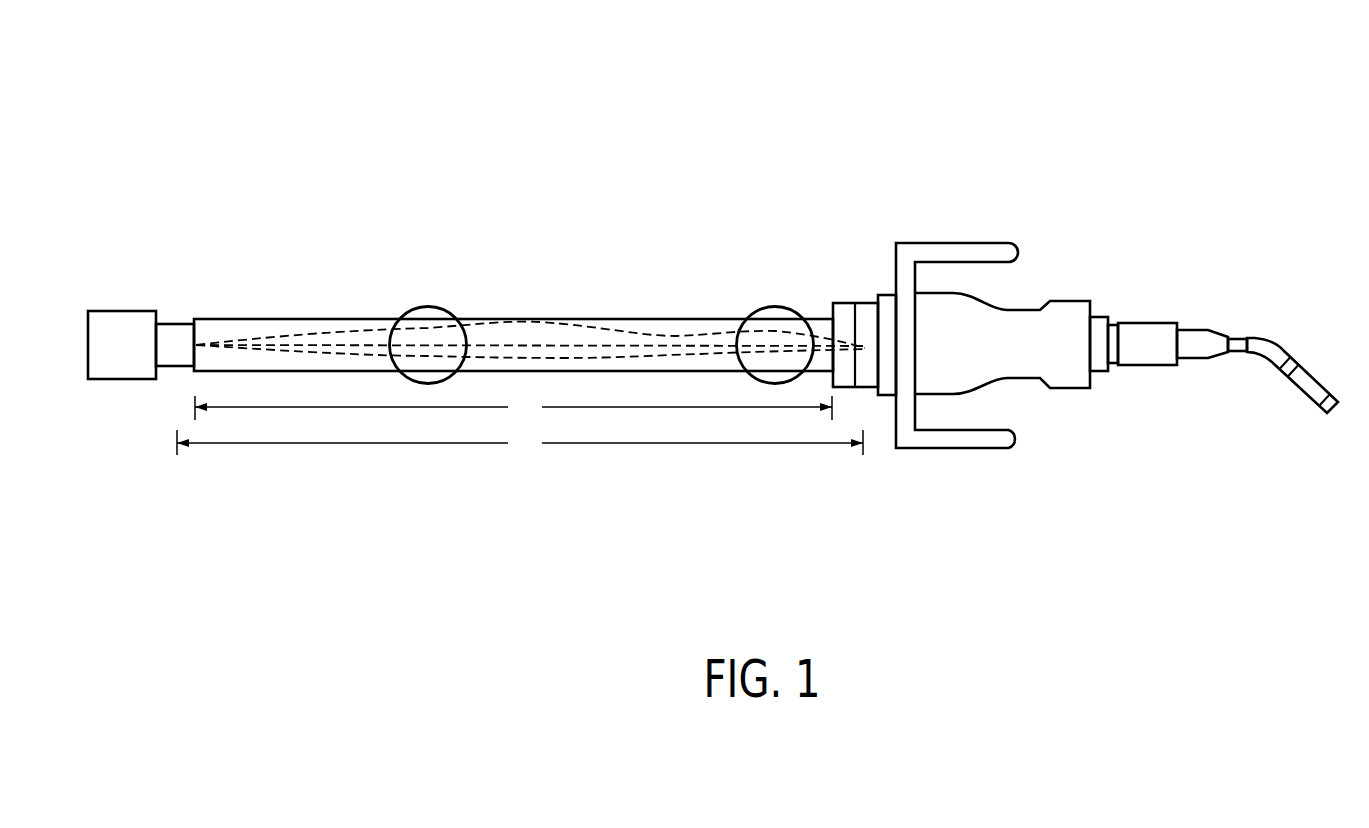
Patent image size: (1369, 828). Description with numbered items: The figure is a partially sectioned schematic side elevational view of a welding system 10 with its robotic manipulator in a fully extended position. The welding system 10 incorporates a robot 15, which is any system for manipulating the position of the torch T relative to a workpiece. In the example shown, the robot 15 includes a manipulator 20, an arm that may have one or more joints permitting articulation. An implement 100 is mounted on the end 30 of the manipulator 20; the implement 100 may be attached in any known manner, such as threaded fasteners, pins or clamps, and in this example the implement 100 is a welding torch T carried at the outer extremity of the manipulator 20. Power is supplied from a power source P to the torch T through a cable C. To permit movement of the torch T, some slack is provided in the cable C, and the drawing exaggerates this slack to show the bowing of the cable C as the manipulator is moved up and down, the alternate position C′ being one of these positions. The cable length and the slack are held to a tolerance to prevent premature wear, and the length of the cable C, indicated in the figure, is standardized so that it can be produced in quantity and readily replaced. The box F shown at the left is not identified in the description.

The welding system 10 is at (246, 175).
The robot 15 is at (373, 304).
The manipulator 20 is at (686, 318).
The end 30 is at (824, 318).
The implement 100 is at (1102, 145).
The fluid source F is at (122, 345).
The power source P is at (175, 345).
The cable C is at (548, 345).
The cable position C′ is at (530, 375).
The torch T is at (1312, 378).